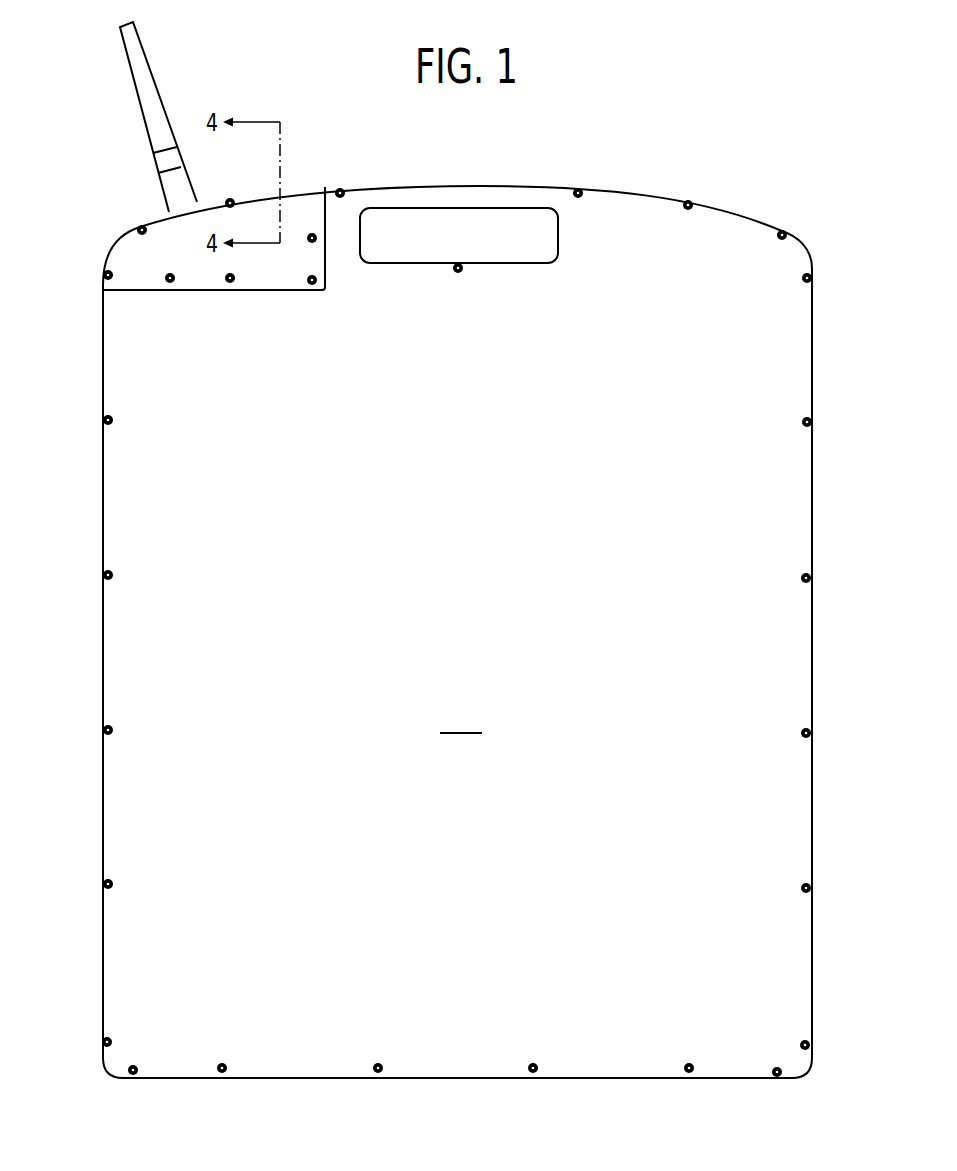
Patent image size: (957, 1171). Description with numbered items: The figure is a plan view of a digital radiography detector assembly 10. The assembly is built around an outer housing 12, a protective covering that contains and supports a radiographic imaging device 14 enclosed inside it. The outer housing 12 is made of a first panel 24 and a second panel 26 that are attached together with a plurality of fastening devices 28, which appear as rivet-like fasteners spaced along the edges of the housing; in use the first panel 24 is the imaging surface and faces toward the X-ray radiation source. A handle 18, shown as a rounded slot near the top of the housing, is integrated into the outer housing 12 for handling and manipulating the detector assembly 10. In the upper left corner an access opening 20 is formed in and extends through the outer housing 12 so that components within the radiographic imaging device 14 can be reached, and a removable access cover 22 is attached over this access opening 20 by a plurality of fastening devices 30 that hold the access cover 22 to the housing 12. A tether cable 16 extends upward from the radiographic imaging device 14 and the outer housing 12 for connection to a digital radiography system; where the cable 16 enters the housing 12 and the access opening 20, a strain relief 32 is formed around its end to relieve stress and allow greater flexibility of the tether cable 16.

The digital radiography detector assembly 10 is at (659, 141).
The outer housing 12 is at (782, 370).
The radiographic imaging device 14 is at (813, 658).
The tether cable 16 is at (140, 65).
The handle 18 is at (448, 192).
The access opening 20 is at (300, 187).
The removable access cover 22 is at (122, 255).
The first panel 24 is at (102, 497).
The second panel 26 is at (461, 717).
The fastening devices 28 is at (813, 890).
The fastening devices 30 is at (230, 283).
The strain relief 32 is at (158, 175).